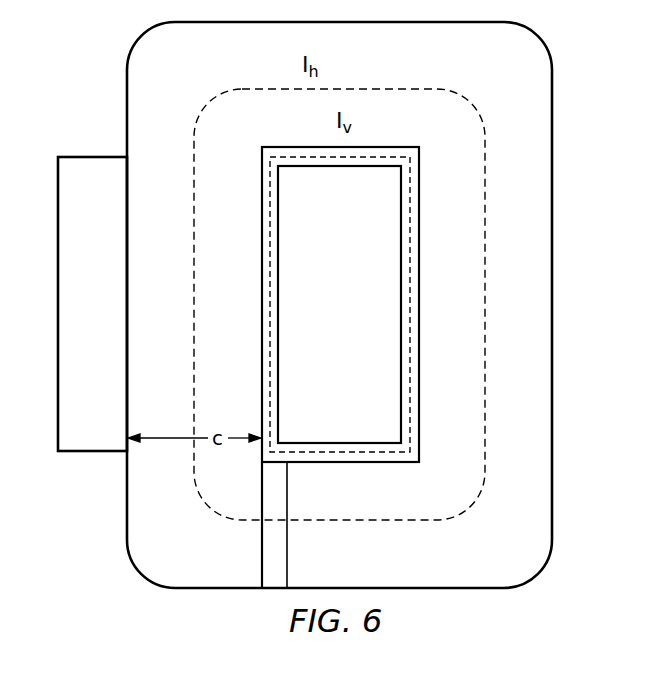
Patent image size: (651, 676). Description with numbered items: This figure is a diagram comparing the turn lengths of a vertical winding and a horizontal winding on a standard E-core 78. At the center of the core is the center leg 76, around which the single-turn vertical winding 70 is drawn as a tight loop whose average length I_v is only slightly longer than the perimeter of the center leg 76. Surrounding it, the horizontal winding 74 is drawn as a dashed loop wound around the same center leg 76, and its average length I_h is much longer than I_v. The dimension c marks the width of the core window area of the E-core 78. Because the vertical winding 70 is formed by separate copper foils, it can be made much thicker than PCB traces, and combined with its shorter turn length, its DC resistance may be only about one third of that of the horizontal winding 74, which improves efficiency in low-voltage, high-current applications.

The vertical winding 70 is at (418, 146).
The horizontal winding 74 is at (463, 508).
The center leg 76 is at (389, 220).
The E-core 78 is at (93, 455).